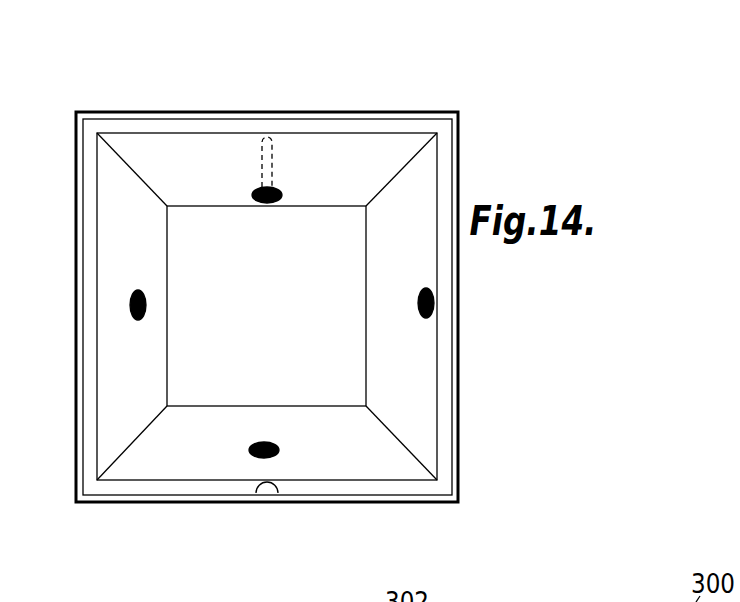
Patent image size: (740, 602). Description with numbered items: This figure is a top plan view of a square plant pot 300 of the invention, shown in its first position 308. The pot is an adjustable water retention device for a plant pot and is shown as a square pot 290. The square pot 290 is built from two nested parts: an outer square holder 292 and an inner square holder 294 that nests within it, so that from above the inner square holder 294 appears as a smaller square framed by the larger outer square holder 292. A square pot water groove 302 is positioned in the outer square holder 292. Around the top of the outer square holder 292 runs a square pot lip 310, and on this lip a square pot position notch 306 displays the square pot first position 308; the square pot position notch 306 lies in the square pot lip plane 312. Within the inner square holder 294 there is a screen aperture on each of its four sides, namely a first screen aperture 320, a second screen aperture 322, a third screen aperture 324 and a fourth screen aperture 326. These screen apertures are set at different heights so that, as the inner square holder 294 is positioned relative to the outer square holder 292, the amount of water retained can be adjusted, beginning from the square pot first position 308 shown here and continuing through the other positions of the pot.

The square pot 290 is at (193, 516).
The outer square holder 292 is at (112, 503).
The inner square holder 294 is at (106, 411).
The square plant pot 300 is at (416, 98).
The square pot water groove 302 is at (262, 170).
The square pot position notch 306 is at (280, 492).
The square pot first position 308 is at (260, 496).
The square pot lip 310 is at (455, 397).
The square pot lip plane 312 is at (443, 460).
The first screen aperture 320 is at (273, 187).
The second screen aperture 322 is at (132, 300).
The third screen aperture 324 is at (262, 442).
The fourth screen aperture 326 is at (435, 303).